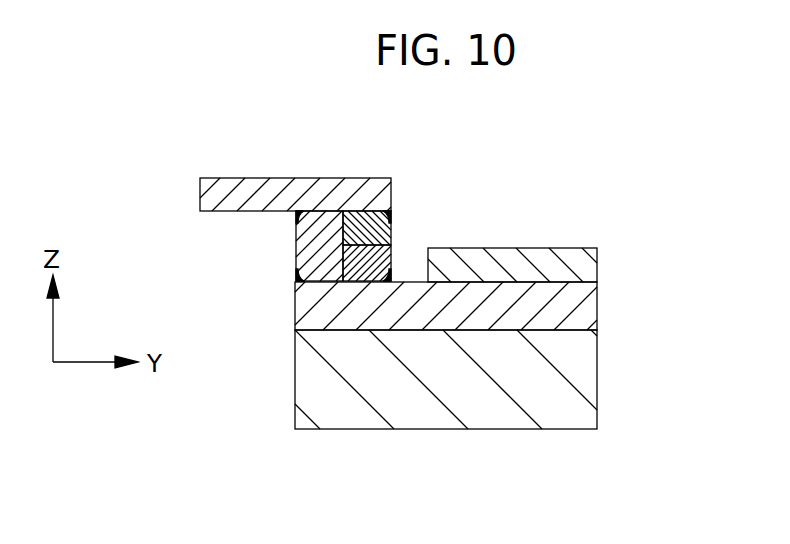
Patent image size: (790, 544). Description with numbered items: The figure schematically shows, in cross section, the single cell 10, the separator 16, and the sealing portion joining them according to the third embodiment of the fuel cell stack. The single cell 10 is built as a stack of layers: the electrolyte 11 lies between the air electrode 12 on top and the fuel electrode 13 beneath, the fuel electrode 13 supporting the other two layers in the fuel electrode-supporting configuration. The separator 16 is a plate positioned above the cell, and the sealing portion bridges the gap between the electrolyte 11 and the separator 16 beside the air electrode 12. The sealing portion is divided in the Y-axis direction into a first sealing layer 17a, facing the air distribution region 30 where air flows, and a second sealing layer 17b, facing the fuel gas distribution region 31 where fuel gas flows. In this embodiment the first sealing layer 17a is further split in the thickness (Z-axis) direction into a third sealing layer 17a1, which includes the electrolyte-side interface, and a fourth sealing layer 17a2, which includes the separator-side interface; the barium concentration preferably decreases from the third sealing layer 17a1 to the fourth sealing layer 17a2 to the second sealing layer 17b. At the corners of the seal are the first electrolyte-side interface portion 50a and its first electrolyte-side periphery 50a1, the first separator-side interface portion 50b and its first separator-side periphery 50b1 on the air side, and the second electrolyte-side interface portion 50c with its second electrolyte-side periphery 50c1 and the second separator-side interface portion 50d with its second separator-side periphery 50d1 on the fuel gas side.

The fuel single cell 10 is at (497, 338).
The electrolyte 11 is at (580, 306).
The air electrode 12 is at (580, 270).
The fuel electrode 13 is at (474, 379).
The separator 16 is at (251, 190).
The first sealing layer 17a is at (375, 361).
The third sealing layer 17a1 is at (377, 275).
The fourth sealing layer 17a2 is at (353, 240).
The second sealing layer 17b is at (318, 222).
The air distribution region 30 is at (511, 239).
The fuel gas distribution region 31 is at (250, 376).
The first electrolyte-side interface portion 50a is at (458, 229).
The first electrolyte-side periphery 50a1 is at (391, 277).
The first separator-side interface portion 50b is at (458, 185).
The first separator-side periphery 50b1 is at (391, 213).
The second electrolyte-side interface portion 50c is at (219, 290).
The second electrolyte-side periphery 50c1 is at (296, 278).
The second separator-side interface portion 50d is at (218, 247).
The second separator-side periphery 50d1 is at (296, 214).